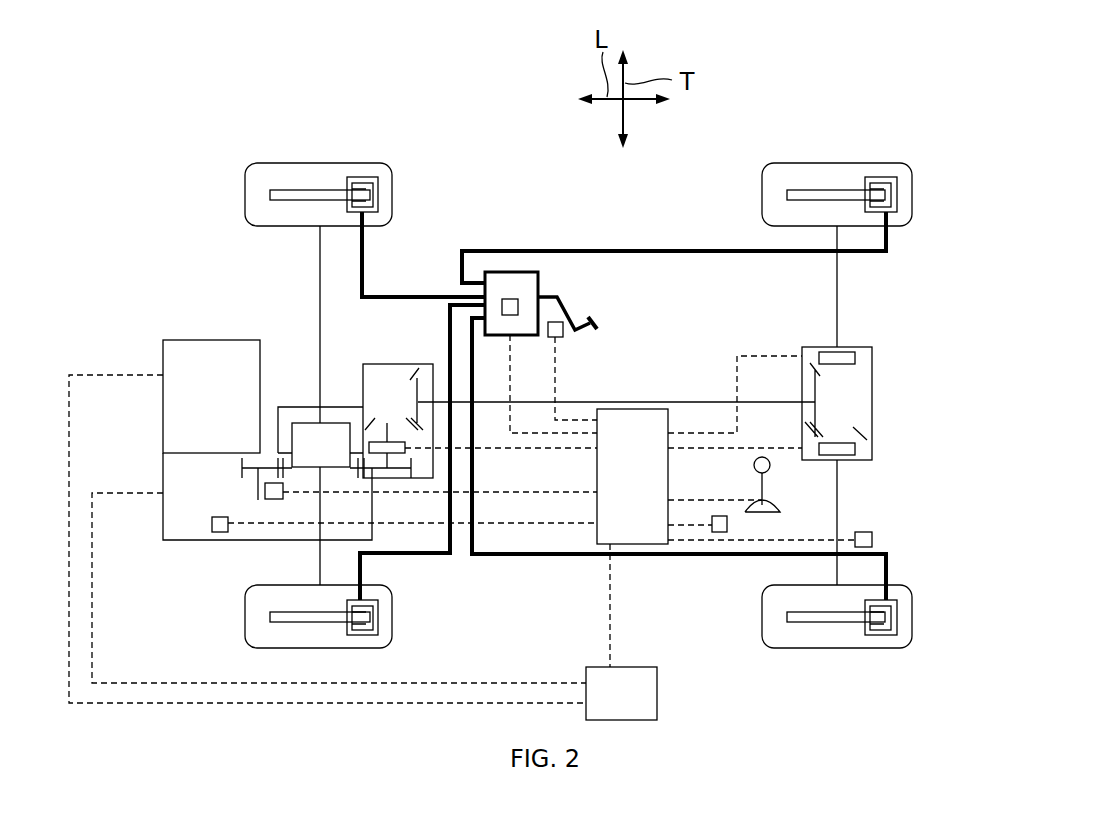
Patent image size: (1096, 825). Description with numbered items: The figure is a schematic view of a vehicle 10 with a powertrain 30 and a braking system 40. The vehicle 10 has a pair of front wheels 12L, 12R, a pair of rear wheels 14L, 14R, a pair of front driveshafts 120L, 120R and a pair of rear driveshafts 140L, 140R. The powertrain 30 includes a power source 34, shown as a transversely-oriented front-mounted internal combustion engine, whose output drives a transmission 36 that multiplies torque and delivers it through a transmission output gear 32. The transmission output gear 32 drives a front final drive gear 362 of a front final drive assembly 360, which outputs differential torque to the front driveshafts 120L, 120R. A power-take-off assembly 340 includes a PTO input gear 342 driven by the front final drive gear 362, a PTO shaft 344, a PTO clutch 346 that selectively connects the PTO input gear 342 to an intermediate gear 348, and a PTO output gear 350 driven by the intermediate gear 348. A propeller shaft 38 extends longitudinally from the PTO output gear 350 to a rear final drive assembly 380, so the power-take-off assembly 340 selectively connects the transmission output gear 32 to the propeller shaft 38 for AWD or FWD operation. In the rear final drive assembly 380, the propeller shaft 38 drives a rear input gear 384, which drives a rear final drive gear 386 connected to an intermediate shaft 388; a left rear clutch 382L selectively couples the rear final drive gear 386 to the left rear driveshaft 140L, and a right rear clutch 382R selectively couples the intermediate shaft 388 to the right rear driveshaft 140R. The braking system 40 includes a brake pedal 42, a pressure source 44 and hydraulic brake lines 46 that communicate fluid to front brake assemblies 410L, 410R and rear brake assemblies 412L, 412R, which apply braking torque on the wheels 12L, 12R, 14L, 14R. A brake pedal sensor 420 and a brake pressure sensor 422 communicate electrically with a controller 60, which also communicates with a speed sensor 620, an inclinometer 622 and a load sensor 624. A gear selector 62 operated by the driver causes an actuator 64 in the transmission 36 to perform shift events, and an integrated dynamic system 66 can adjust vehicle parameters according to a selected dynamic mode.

The vehicle 10 is at (489, 136).
The front wheel 12R is at (262, 163).
The front wheel 12L is at (245, 622).
The rear wheel 14R is at (775, 163).
The rear wheel 14L is at (775, 648).
The powertrain 30 is at (148, 412).
The transmission output gear 32 is at (240, 468).
The power source 34 is at (185, 340).
The transmission 36 is at (163, 543).
The propeller shaft 38 is at (718, 402).
The braking system 40 is at (626, 316).
The brake pedal 42 is at (592, 323).
The pressure source 44 is at (535, 272).
The hydraulic brake lines 46 is at (364, 232).
The controller 60 is at (652, 544).
The gear selector 62 is at (780, 510).
The actuator 64 is at (212, 523).
The integrated dynamic system 66 is at (657, 695).
The front driveshaft 120R is at (320, 258).
The front driveshaft 120L is at (320, 567).
The right rear driveshaft 140R is at (837, 277).
The left rear driveshaft 140L is at (837, 487).
The power-take-off assembly 340 is at (388, 372).
The PTO input gear 342 is at (378, 470).
The PTO shaft 344 is at (405, 445).
The PTO clutch 346 is at (405, 452).
The intermediate gear 348 is at (400, 422).
The PTO output gear 350 is at (433, 372).
The front final drive assembly 360 is at (301, 414).
The front final drive gear 362 is at (307, 465).
The rear final drive assembly 380 is at (902, 404).
The right rear clutch 382R is at (855, 352).
The left rear clutch 382L is at (855, 449).
The rear input gear 384 is at (810, 388).
The rear final drive gear 386 is at (860, 430).
The intermediate shaft 388 is at (838, 372).
The front brake assembly 410R is at (378, 196).
The front brake assembly 410L is at (352, 635).
The rear brake assembly 412R is at (877, 177).
The rear brake assembly 412L is at (880, 635).
The brake pedal sensor 420 is at (562, 337).
The brake pressure sensor 422 is at (510, 299).
The speed sensor 620 is at (273, 501).
The inclinometer 622 is at (720, 532).
The load sensor 624 is at (872, 540).